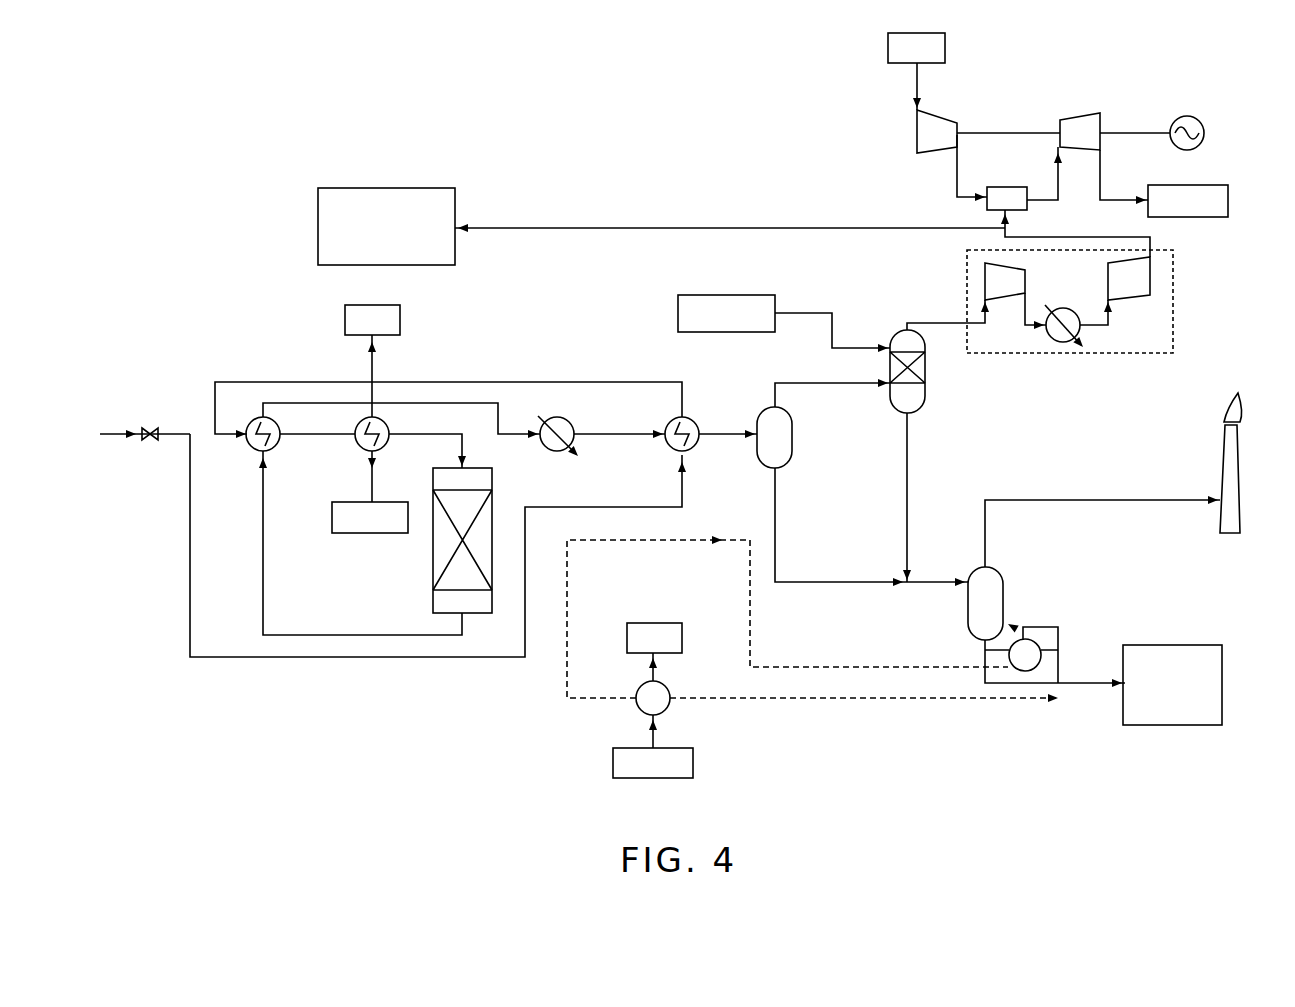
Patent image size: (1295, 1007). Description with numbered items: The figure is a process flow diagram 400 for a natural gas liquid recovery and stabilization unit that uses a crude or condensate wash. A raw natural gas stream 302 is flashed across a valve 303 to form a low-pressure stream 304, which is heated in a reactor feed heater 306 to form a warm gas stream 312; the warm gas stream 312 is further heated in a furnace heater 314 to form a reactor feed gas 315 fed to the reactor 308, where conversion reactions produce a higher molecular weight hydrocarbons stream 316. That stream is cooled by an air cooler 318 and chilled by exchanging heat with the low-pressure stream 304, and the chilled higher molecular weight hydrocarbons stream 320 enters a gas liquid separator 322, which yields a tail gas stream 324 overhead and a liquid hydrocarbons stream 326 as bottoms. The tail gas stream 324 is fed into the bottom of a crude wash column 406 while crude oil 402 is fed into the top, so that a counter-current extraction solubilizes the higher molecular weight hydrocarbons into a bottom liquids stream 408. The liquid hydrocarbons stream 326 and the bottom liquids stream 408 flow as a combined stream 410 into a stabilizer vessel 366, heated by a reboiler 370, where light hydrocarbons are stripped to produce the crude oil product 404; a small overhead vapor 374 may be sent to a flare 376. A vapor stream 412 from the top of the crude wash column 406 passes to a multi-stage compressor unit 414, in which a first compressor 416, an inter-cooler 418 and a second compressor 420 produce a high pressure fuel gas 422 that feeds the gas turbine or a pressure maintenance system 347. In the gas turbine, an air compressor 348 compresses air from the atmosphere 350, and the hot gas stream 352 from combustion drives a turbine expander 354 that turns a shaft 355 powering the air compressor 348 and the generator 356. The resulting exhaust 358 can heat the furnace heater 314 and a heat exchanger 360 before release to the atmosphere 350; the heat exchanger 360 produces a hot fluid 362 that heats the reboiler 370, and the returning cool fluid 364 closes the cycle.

The raw natural gas stream 302 is at (122, 430).
The valve 303 is at (157, 425).
The low-pressure stream 304 is at (696, 420).
The reactor feed heater 306 is at (253, 448).
The reactor 308 is at (433, 585).
The warm gas stream 312 is at (297, 437).
The furnace heater 314 is at (356, 426).
The reactor feed gas 315 is at (408, 434).
The higher molecular weight hydrocarbons stream 316 is at (287, 403).
The air cooler 318 is at (560, 418).
The chilled higher molecular weight hydrocarbons stream 320 is at (720, 446).
The gas liquid separator 322 is at (792, 440).
The tail gas stream 324 is at (800, 383).
The liquid hydrocarbons stream 326 is at (775, 530).
The pressure maintenance system 347 is at (385, 188).
The air compressor 348 is at (940, 115).
The atmosphere 350 is at (888, 45).
The hot gas stream 352 is at (1058, 185).
The turbine expander 354 is at (1085, 113).
The shaft 355 is at (993, 133).
The generator 356 is at (1202, 125).
The exhaust 358 is at (1180, 185).
The heat exchanger 360 is at (670, 708).
The hot fluid 362 is at (652, 540).
The cool fluid 364 is at (820, 700).
The stabilizer vessel 366 is at (1008, 592).
The reboiler 370 is at (1048, 658).
The overhead vapor 374 is at (1100, 500).
The flare 376 is at (1225, 533).
The process flow diagram 400 is at (692, 816).
The crude oil 402 is at (737, 295).
The crude oil product 404 is at (1170, 645).
The crude wash column 406 is at (925, 398).
The bottom liquids stream 408 is at (908, 448).
The combined stream 410 is at (935, 580).
The vapor stream 412 is at (920, 323).
The multi-stage compressor unit 414 is at (1173, 318).
The first compressor 416 is at (1000, 263).
The inter-cooler 418 is at (1063, 345).
The second compressor 420 is at (1150, 258).
The high pressure fuel gas 422 is at (540, 228).